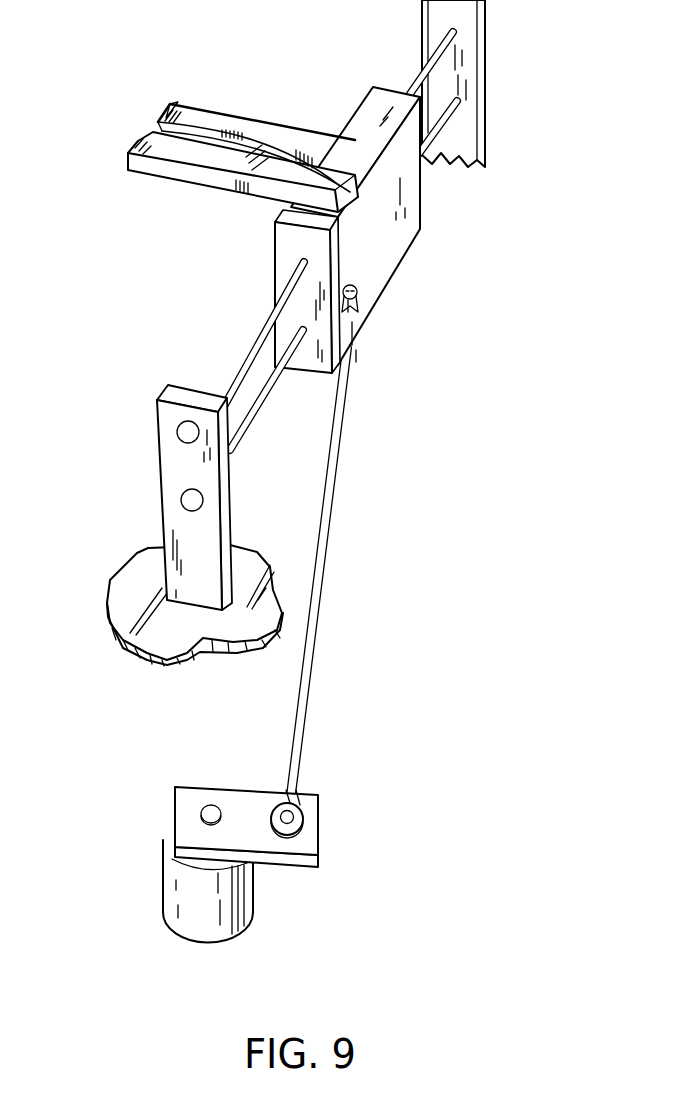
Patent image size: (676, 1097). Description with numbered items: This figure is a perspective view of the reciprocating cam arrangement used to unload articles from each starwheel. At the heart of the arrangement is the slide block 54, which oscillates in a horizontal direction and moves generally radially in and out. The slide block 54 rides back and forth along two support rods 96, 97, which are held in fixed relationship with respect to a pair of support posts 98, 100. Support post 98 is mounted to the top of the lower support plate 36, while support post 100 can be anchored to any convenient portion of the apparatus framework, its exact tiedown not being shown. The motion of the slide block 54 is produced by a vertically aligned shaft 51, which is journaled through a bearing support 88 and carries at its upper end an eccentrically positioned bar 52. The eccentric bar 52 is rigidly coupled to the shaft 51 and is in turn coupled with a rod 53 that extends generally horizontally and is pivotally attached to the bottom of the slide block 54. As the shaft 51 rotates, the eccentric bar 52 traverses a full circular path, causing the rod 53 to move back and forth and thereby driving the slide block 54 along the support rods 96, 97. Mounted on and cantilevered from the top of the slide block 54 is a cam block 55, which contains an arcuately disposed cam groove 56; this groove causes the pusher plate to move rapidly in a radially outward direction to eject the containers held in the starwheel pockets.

The lower support plate 36 is at (107, 603).
The shaft 51 is at (200, 812).
The eccentric bar 52 is at (318, 803).
The rod 53 is at (328, 558).
The slide block 54 is at (372, 237).
The cam block 55 is at (245, 115).
The cam groove 56 is at (153, 132).
The bearing support 88 is at (163, 890).
The support rod 96 is at (240, 330).
The support rod 97 is at (243, 440).
The support post 98 is at (158, 470).
The support post 100 is at (487, 90).